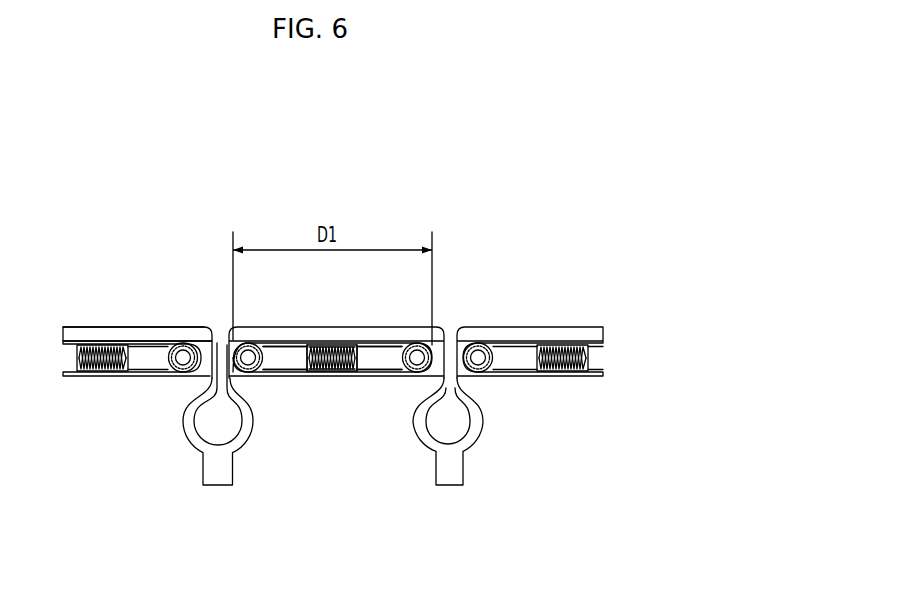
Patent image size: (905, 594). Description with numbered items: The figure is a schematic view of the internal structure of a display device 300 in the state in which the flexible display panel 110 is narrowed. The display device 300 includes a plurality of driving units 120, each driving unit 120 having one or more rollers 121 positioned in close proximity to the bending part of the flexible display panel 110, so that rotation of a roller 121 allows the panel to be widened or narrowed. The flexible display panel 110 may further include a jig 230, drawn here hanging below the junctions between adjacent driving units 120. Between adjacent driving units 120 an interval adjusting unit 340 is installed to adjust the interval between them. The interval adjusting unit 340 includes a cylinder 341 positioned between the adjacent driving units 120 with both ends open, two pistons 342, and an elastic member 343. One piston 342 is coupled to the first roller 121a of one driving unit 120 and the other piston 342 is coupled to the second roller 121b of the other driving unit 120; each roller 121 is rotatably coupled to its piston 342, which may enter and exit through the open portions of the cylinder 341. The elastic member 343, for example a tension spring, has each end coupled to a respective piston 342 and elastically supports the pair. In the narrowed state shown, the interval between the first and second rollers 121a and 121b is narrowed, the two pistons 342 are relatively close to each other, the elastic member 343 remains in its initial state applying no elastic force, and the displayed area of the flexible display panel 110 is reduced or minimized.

The display device 300 is at (107, 214).
The flexible display panel 110 is at (120, 316).
The driving unit 120 is at (175, 397).
The roller 121 is at (333, 327).
The first roller 121a is at (258, 343).
The second roller 121b is at (412, 343).
The jig 230 is at (216, 486).
The interval adjusting unit 340 is at (103, 393).
The cylinder 341 is at (288, 376).
The piston 342 is at (381, 372).
The elastic member 343 is at (335, 372).